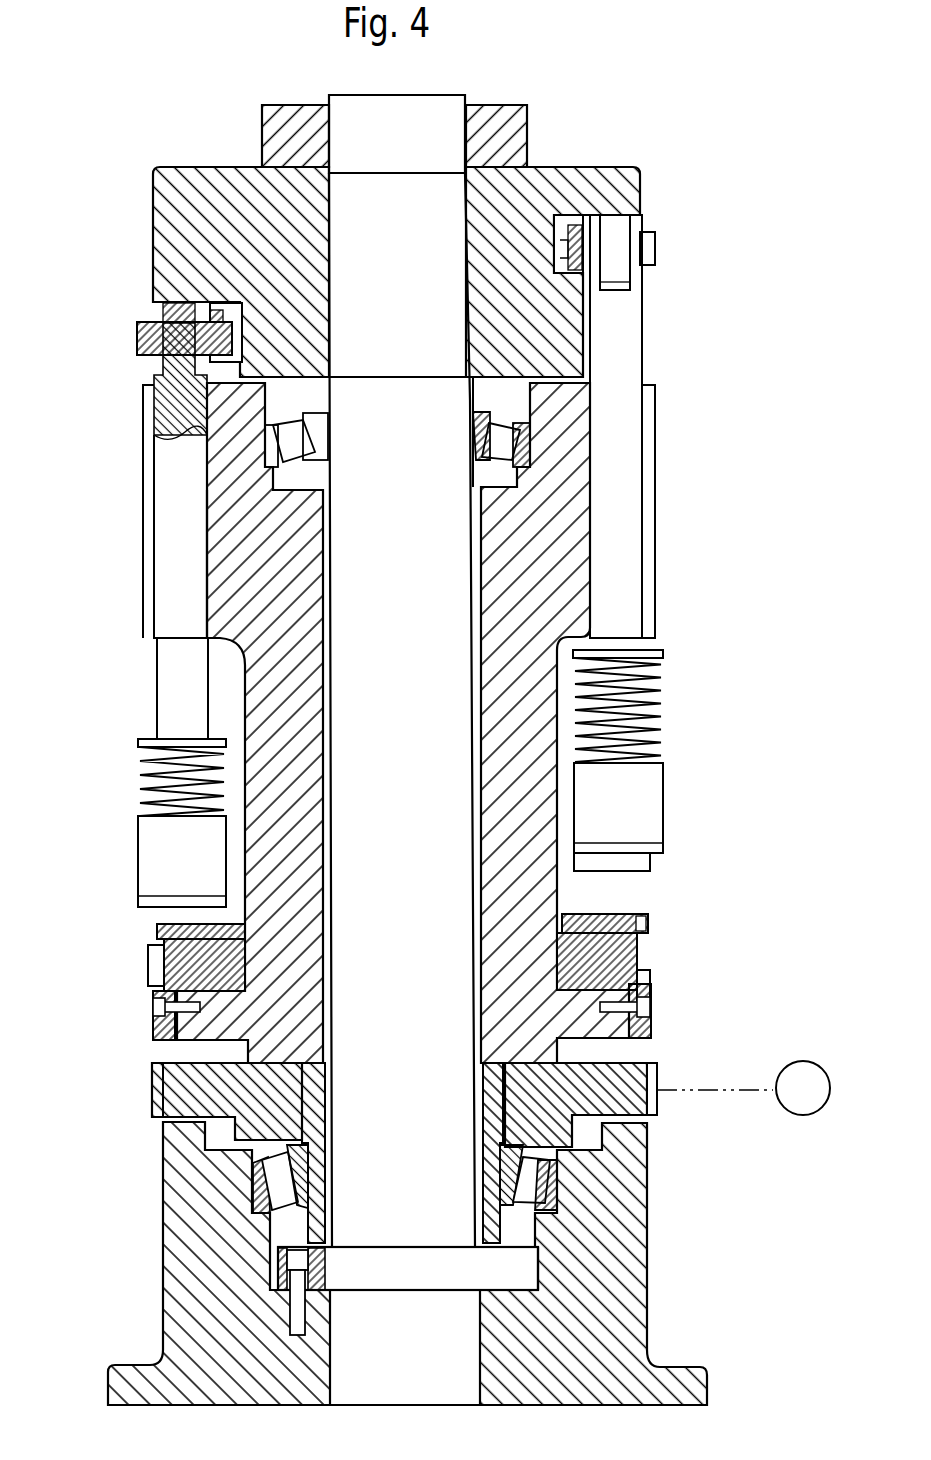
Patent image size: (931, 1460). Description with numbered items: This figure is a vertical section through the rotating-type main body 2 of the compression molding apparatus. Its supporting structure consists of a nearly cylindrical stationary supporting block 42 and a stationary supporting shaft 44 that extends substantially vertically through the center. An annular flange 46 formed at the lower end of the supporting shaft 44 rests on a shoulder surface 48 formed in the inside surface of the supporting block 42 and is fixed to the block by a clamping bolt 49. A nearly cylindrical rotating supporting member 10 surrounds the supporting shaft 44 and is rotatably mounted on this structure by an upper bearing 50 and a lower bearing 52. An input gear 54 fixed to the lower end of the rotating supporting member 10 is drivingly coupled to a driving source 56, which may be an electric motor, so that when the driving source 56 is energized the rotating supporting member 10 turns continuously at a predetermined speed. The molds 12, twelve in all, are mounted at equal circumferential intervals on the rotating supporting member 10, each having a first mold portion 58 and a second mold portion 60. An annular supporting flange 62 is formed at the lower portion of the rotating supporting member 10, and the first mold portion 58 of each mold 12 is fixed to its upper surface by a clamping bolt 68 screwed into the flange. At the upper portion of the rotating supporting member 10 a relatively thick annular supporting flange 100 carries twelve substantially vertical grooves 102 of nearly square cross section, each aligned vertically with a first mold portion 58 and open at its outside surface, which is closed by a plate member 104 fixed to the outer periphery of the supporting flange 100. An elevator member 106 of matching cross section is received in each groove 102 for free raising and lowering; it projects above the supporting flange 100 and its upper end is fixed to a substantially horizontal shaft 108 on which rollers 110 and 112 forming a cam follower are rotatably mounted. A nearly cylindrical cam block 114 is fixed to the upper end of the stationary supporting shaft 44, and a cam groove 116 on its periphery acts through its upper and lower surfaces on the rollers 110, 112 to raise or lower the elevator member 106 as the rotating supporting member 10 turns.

The rotating-type main body 2 is at (718, 440).
The rotating supporting member 10 is at (328, 690).
The mold 12 is at (394, 871).
The stationary supporting block 42 is at (648, 1228).
The stationary supporting shaft 44 is at (416, 847).
The annular flange 46 is at (505, 1280).
The shoulder surface 48 is at (530, 1280).
The clamping bolt 49 is at (325, 1260).
The upper bearing 50 is at (300, 452).
The lower bearing 52 is at (290, 1185).
The input gear 54 is at (657, 1112).
The driving source 56 is at (818, 1100).
The first mold portion 58 is at (152, 972).
The second mold portion 60 is at (153, 937).
The annular supporting flange 62 is at (180, 1042).
The clamping bolt 68 is at (158, 1012).
The annular supporting flange 100 is at (213, 538).
The groove 102 is at (203, 577).
The plate member 104 is at (143, 455).
The elevator member 106 is at (158, 672).
The shaft 108 is at (137, 338).
The roller 110 is at (160, 300).
The roller 112 is at (216, 315).
The cam block 114 is at (200, 167).
The cam groove 116 is at (240, 312).